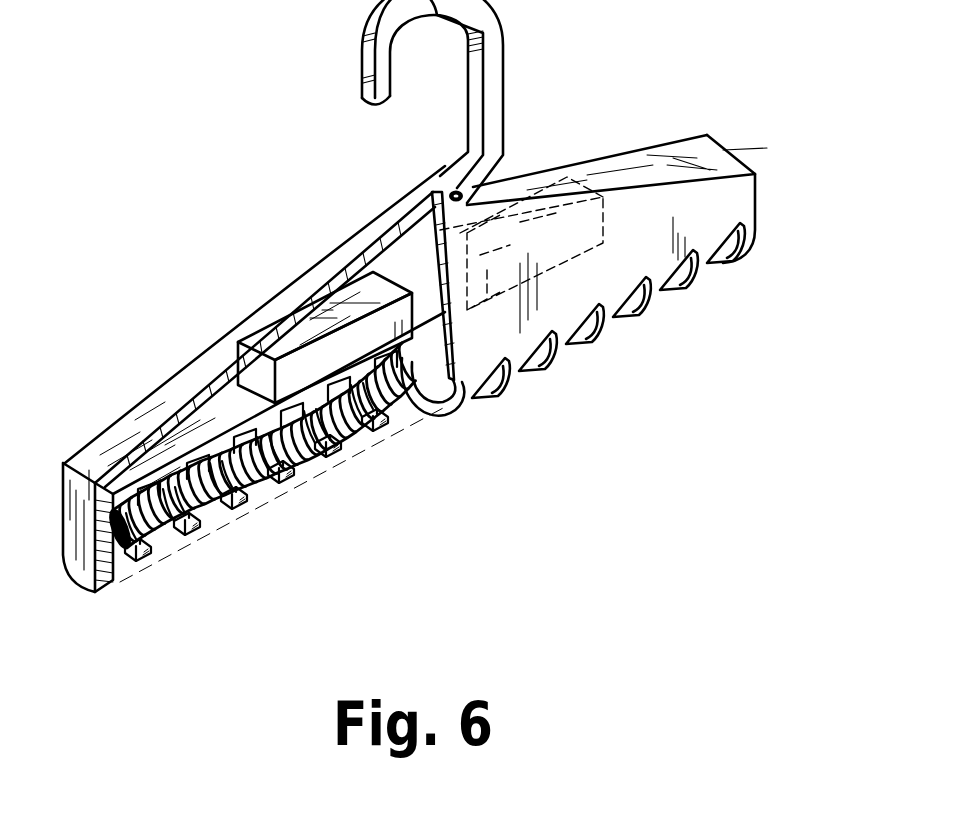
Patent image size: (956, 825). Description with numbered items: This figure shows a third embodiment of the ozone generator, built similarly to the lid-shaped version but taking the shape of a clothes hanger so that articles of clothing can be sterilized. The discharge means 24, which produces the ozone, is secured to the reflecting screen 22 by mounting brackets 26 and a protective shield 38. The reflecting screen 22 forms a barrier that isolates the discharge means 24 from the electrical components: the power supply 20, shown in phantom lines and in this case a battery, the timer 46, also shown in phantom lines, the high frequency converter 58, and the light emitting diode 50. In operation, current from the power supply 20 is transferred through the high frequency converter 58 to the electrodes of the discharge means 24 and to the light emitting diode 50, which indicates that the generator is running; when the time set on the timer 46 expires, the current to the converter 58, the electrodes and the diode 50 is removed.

The power supply 20 is at (593, 217).
The reflecting screen 22 is at (190, 437).
The discharge means 24 is at (183, 515).
The mounting brackets 26 is at (133, 560).
The protective shield 38 is at (232, 525).
The timer 46 is at (463, 246).
The light emitting diode 50 is at (455, 193).
The high frequency converter 58 is at (250, 372).